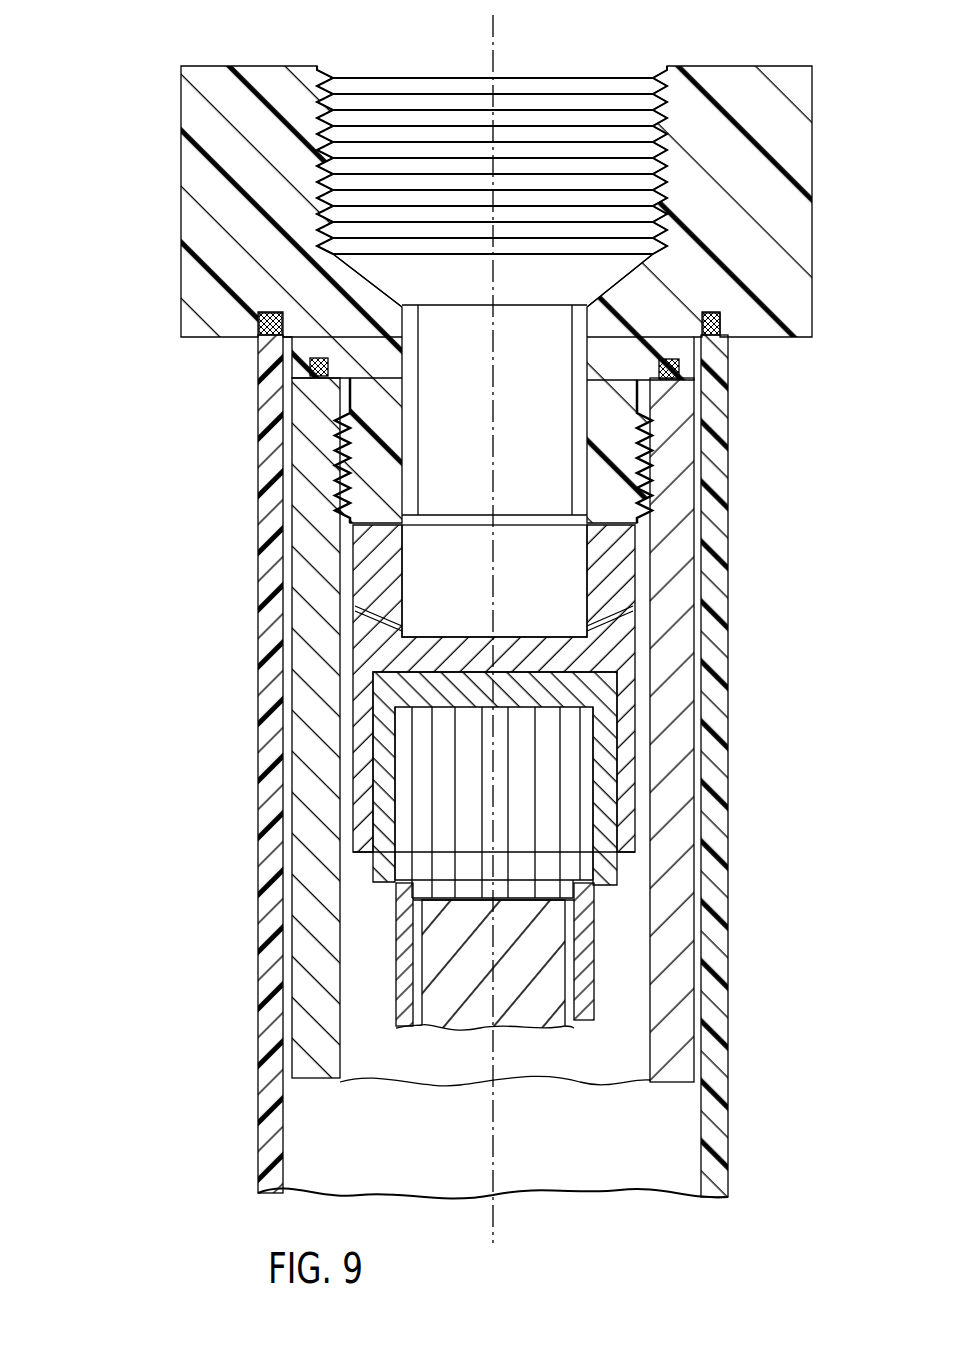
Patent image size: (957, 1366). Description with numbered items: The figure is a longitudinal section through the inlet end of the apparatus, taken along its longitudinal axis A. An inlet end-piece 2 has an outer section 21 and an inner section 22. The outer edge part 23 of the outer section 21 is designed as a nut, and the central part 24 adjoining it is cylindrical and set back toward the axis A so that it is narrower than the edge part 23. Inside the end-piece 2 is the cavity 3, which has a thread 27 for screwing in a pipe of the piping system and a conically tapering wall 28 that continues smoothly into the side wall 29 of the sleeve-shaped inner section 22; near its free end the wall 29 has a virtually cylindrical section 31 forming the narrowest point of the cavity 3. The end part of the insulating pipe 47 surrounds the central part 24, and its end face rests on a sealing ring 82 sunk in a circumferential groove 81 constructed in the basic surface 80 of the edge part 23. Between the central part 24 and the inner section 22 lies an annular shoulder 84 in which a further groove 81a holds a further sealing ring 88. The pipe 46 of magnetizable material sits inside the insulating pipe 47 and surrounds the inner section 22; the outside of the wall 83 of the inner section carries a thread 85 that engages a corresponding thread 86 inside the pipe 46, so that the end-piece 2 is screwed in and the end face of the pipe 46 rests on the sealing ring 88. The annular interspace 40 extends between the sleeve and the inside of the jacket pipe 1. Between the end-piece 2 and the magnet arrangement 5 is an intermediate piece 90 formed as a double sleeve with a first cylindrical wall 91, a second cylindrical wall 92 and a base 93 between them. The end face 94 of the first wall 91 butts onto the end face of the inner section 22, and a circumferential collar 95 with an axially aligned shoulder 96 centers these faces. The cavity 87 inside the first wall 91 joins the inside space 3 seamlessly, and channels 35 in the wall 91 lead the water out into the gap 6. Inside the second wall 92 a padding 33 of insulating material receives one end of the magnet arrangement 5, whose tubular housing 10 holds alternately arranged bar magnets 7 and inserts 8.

The jacket pipe 1 is at (162, 685).
The inlet end-piece 2 is at (160, 182).
The cavity 3 is at (413, 165).
The magnet arrangement 5 is at (383, 1002).
The gap 6 is at (348, 893).
The bar magnets 7 is at (555, 985).
The inserts 8 is at (567, 750).
The tubular housing 10 is at (600, 905).
The outer section of the end-piece 21 is at (742, 60).
The inner section of the end-piece 22 is at (637, 645).
The outer edge part 23 is at (207, 90).
The central part 24 is at (683, 452).
The thread 27 is at (660, 100).
The conical wall 28 is at (358, 270).
The side wall of the sleeve 29 is at (615, 285).
The cylindrical section 31 is at (407, 447).
The padding 33 is at (602, 690).
The channels 35 is at (402, 627).
The annular interspace 40 is at (343, 743).
The magnetizable pipe 46 is at (325, 977).
The insulating pipe 47 is at (275, 937).
The basic surface 80 is at (258, 338).
The circumferential groove 81 is at (257, 318).
The further circumferential groove 81a is at (668, 340).
The sealing ring 82 is at (312, 366).
The wall of the pipe piece 83 is at (345, 505).
The shoulder 84 is at (300, 383).
The thread 85 is at (340, 430).
The corresponding thread 86 is at (340, 468).
The cavity 87 is at (550, 617).
The further sealing ring 88 is at (700, 371).
The intermediate piece 90 is at (648, 557).
The first sleeve wall 91 is at (637, 588).
The second sleeve wall 92 is at (635, 792).
The base 93 is at (463, 657).
The end face 94 is at (630, 506).
The circumferential collar 95 is at (598, 518).
The axially aligned shoulder 96 is at (345, 538).
The longitudinal axis A is at (493, 50).